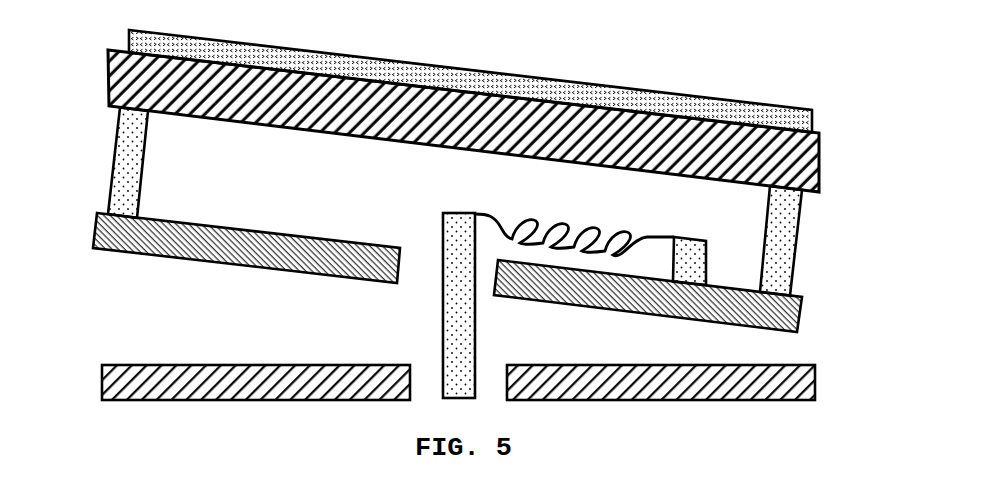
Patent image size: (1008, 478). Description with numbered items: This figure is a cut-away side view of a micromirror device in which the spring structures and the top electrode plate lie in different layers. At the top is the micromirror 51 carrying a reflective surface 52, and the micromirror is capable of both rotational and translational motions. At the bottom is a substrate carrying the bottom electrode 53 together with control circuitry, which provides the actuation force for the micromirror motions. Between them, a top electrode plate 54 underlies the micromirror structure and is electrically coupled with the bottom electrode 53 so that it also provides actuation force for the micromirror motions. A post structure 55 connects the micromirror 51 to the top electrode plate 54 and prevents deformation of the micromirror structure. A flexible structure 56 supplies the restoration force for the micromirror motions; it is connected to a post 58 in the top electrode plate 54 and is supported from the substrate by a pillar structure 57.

The micromirror 51 is at (807, 155).
The reflective surface 52 is at (723, 112).
The bottom electrode 53 is at (810, 363).
The top electrode plate 54 is at (780, 307).
The post structure 55 is at (125, 158).
The flexible structure 56 is at (623, 222).
The pillar structure 57 is at (443, 298).
The post 58 is at (693, 256).